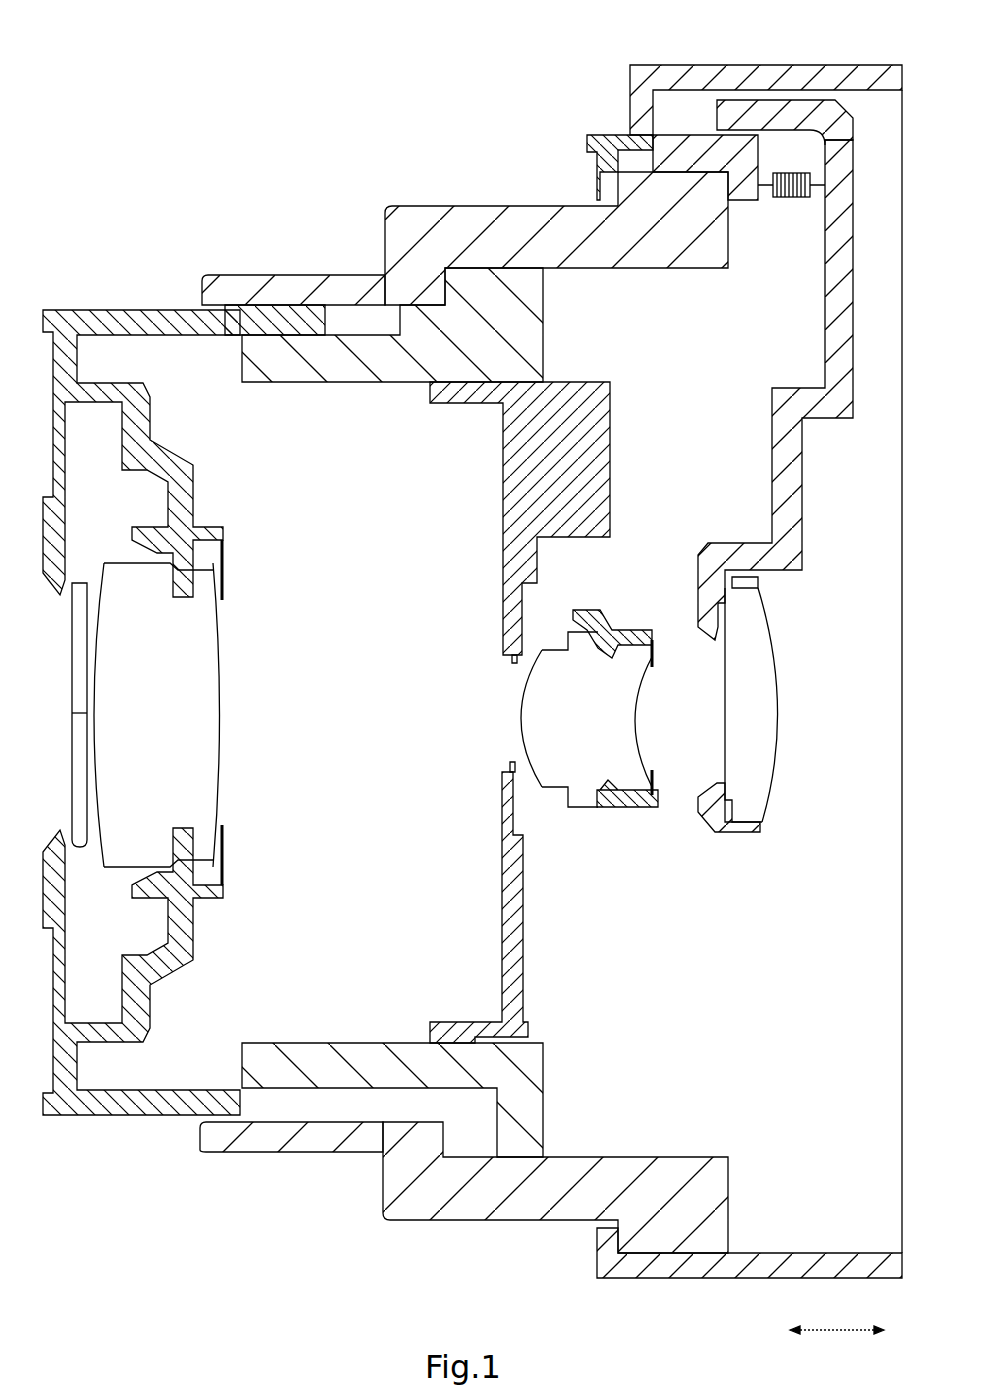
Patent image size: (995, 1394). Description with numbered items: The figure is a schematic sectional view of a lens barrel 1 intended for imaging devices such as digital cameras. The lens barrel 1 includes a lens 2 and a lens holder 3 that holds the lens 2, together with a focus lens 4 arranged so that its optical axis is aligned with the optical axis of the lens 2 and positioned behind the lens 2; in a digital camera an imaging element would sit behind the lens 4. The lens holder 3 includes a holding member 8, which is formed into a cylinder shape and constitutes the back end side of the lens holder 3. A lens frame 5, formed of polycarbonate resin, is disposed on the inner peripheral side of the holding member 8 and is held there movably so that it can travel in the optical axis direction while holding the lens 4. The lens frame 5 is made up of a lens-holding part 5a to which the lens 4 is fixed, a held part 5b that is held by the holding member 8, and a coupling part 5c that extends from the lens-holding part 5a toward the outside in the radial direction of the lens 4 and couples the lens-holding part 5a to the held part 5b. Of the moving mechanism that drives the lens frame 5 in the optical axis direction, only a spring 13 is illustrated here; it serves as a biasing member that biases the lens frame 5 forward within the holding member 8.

The lens barrel 1 is at (132, 84).
The lens 2 is at (94, 630).
The lens holder 3 is at (294, 274).
The focus lens 4 is at (780, 712).
The lens frame 5 is at (770, 466).
The lens-holding part 5a is at (737, 834).
The held part 5b is at (796, 98).
The coupling part 5c is at (775, 390).
The holding member 8 is at (748, 64).
The spring 13 is at (794, 200).